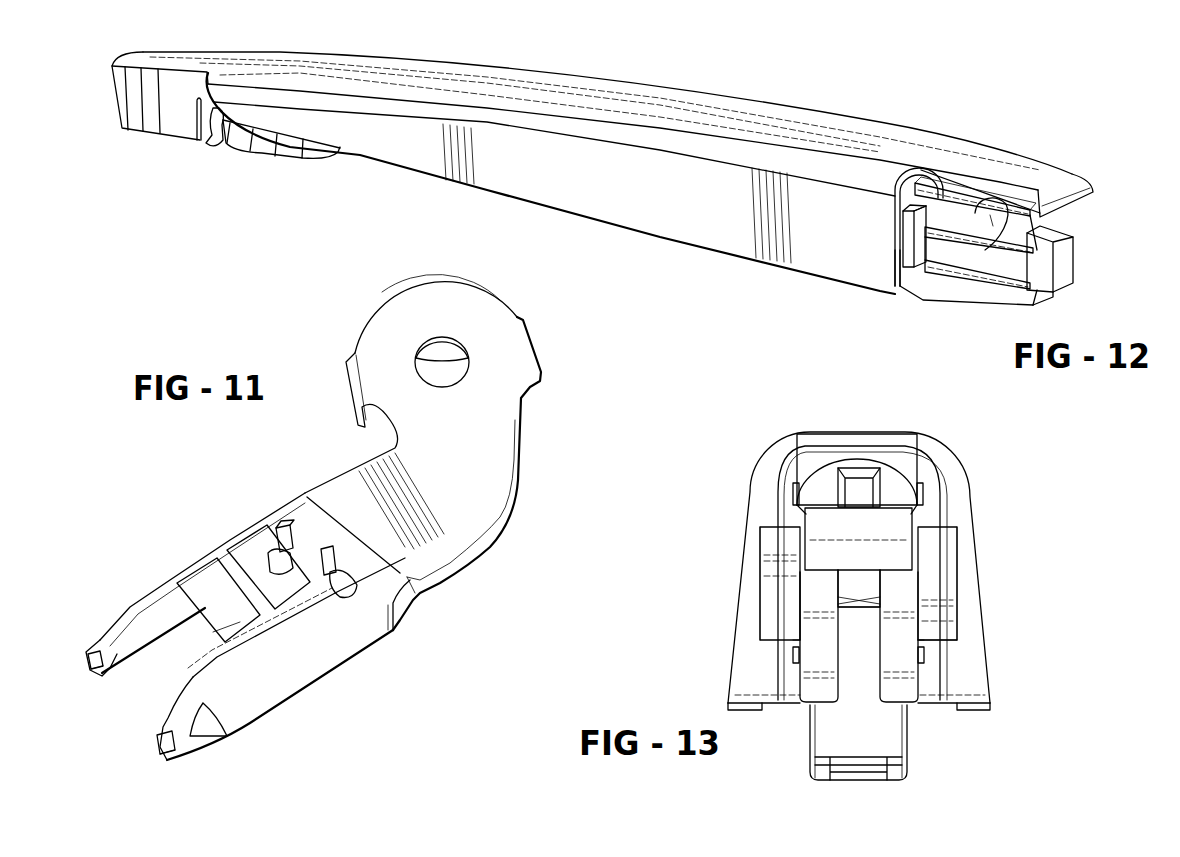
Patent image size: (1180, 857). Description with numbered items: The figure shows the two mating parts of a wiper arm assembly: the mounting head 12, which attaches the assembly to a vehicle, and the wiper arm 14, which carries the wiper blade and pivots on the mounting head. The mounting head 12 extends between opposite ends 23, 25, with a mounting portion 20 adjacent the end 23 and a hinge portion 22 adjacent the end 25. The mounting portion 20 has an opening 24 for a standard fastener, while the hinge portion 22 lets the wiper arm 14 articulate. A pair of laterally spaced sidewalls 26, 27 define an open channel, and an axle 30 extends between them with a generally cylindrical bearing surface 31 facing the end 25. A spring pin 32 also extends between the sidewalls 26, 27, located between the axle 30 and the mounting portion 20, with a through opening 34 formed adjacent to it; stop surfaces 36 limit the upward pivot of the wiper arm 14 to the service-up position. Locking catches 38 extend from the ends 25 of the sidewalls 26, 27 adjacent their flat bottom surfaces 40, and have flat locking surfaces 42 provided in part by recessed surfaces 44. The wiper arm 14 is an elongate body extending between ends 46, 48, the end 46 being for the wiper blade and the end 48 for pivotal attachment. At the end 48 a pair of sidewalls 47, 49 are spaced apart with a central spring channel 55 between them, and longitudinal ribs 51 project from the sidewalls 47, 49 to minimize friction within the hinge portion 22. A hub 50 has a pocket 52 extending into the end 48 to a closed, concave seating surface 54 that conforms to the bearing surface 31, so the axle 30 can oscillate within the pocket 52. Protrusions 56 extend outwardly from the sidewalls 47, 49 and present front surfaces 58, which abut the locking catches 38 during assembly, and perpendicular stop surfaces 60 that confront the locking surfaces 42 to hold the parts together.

In FIG. 11, the mounting head 12 is at (360, 647).
In FIG. 12, the wiper arm 14 is at (688, 92).
In FIG. 13, the wiper arm 14 is at (935, 450).
In FIG. 11, the mounting portion 20 is at (500, 298).
In FIG. 11, the hinge portion 22 is at (303, 690).
In FIG. 11, the end 23 is at (390, 287).
In FIG. 11, the opening 24 is at (443, 347).
In FIG. 11, the end 25 is at (103, 630).
In FIG. 11, the sidewall 26 is at (127, 588).
In FIG. 11, the sidewall 27 is at (253, 700).
In FIG. 11, the axle 30 is at (207, 594).
In FIG. 11, the bearing surface 31 is at (210, 630).
In FIG. 11, the spring pin 32 is at (277, 572).
In FIG. 11, the through opening 34 is at (323, 570).
In FIG. 11, the stop surface 36 is at (287, 515).
In FIG. 11, the locking catch 38 is at (160, 724).
In FIG. 11, the bottom surface 40 is at (121, 668).
In FIG. 11, the locking surface 42 is at (90, 667).
In FIG. 11, the recessed surface 44 is at (88, 655).
In FIG. 12, the end 46 is at (148, 57).
In FIG. 12, the sidewall 47 is at (1027, 302).
In FIG. 13, the sidewall 47 is at (790, 620).
In FIG. 12, the end 48 is at (1058, 167).
In FIG. 13, the end 48 is at (838, 445).
In FIG. 12, the sidewall 49 is at (1075, 252).
In FIG. 13, the sidewall 49 is at (953, 640).
In FIG. 12, the hub 50 is at (1076, 223).
In FIG. 13, the hub 50 is at (896, 551).
In FIG. 12, the longitudinal rib 51 is at (960, 194).
In FIG. 13, the longitudinal rib 51 is at (793, 485).
In FIG. 12, the pocket 52 is at (995, 207).
In FIG. 13, the pocket 52 is at (808, 562).
In FIG. 12, the seating surface 54 is at (1003, 222).
In FIG. 13, the seating surface 54 is at (830, 565).
In FIG. 12, the spring channel 55 is at (1055, 299).
In FIG. 13, the spring channel 55 is at (862, 681).
In FIG. 12, the protrusion 56 is at (903, 231).
In FIG. 13, the protrusion 56 is at (755, 642).
In FIG. 12, the front surface 58 is at (922, 209).
In FIG. 13, the front surface 58 is at (768, 595).
In FIG. 12, the stop surface 60 is at (897, 287).
In FIG. 13, the stop surface 60 is at (793, 637).